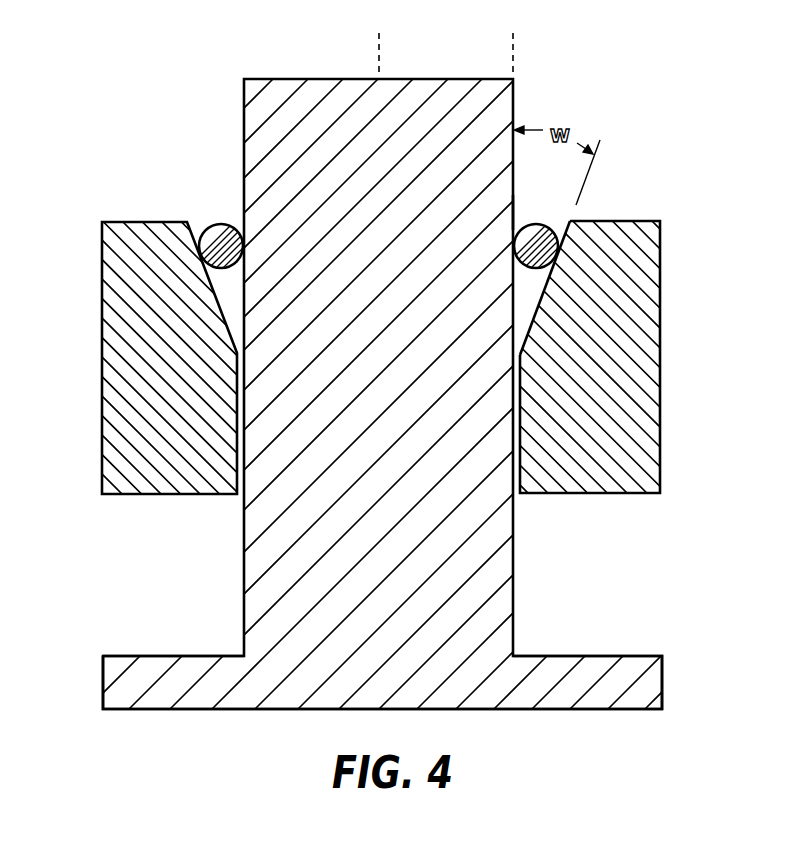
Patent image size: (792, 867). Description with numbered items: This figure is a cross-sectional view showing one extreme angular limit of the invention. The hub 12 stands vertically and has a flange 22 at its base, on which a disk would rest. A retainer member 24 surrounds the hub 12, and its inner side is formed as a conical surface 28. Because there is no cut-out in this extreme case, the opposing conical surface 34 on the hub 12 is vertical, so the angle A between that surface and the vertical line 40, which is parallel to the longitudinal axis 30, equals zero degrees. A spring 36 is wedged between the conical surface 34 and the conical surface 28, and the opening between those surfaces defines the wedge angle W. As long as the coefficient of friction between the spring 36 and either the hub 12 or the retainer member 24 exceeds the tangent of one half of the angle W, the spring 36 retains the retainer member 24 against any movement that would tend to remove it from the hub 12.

The hub 12 is at (515, 552).
The flange 22 is at (603, 655).
The retainer member 24 is at (662, 320).
The conical surface 28 is at (540, 303).
The longitudinal axis 30 is at (378, 53).
The conical surface 34 is at (517, 218).
The spring 36 is at (551, 222).
The vertical line 40 is at (513, 53).